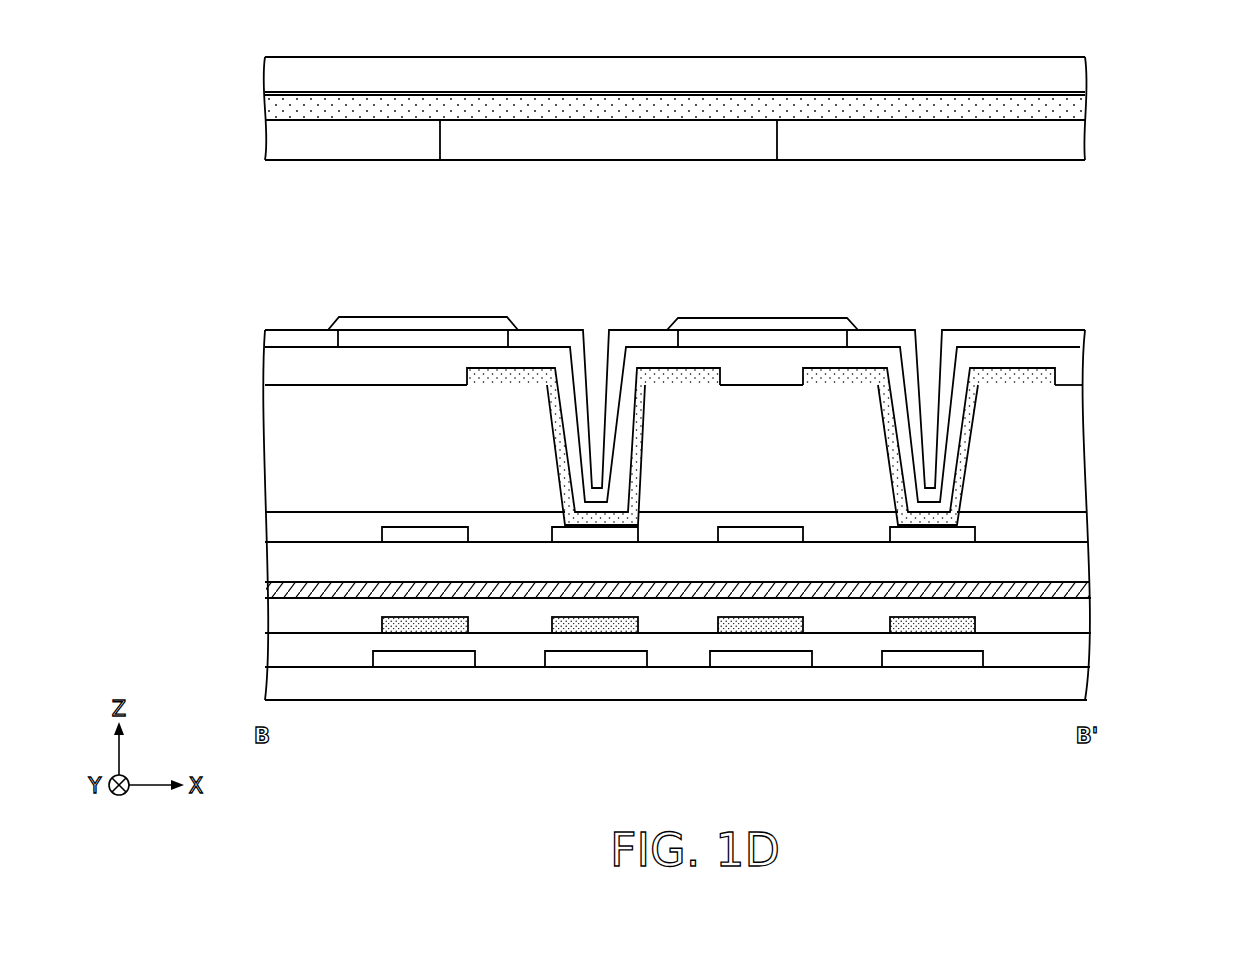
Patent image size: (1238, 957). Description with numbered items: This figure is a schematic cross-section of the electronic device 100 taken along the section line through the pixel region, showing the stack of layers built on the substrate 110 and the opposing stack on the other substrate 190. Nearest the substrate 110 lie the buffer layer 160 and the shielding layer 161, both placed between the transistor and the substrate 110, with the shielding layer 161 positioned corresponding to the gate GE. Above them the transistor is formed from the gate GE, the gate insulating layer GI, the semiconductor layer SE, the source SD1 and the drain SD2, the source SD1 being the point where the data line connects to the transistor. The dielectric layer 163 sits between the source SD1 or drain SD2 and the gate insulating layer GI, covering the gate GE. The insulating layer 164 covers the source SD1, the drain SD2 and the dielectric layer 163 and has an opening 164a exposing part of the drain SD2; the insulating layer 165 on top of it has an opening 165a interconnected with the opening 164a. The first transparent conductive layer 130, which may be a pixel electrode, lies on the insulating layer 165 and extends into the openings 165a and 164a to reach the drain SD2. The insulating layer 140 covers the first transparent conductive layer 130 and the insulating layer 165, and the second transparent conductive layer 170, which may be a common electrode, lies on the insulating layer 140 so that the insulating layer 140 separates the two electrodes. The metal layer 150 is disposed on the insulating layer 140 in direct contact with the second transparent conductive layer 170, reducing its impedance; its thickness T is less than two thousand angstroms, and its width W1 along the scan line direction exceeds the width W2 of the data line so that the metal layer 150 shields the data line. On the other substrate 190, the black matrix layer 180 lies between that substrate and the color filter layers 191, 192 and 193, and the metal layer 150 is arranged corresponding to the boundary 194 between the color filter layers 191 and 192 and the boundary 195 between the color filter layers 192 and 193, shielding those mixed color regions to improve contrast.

The electronic device 100 is at (1178, 775).
The substrate 110 is at (1077, 690).
The first transparent conductive layer 130 is at (1040, 377).
The insulating layer 140 is at (1074, 362).
The metal layer 150 is at (832, 339).
The buffer layer 160 is at (1077, 652).
The shielding layer 161 is at (933, 660).
The dielectric layer 163 is at (1076, 566).
The insulating layer 164 is at (1074, 530).
The opening 164a is at (958, 520).
The insulating layer 165 is at (1074, 475).
The opening 165a is at (597, 327).
The second transparent conductive layer 170 is at (1074, 337).
The black matrix layer 180 is at (1074, 108).
The other substrate 190 is at (1074, 71).
The color filter layer 191 is at (315, 145).
The color filter layer 192 is at (608, 145).
The color filter layer 193 is at (1074, 145).
The boundary 194 is at (438, 140).
The boundary 195 is at (775, 140).
The gate GE is at (1080, 590).
The gate insulating layer GI is at (1077, 617).
The semiconductor layer SE is at (965, 625).
The source SD1 is at (392, 535).
The drain SD2 is at (562, 535).
The thickness T is at (372, 372).
The width W1 is at (847, 318).
The width W2 is at (719, 527).